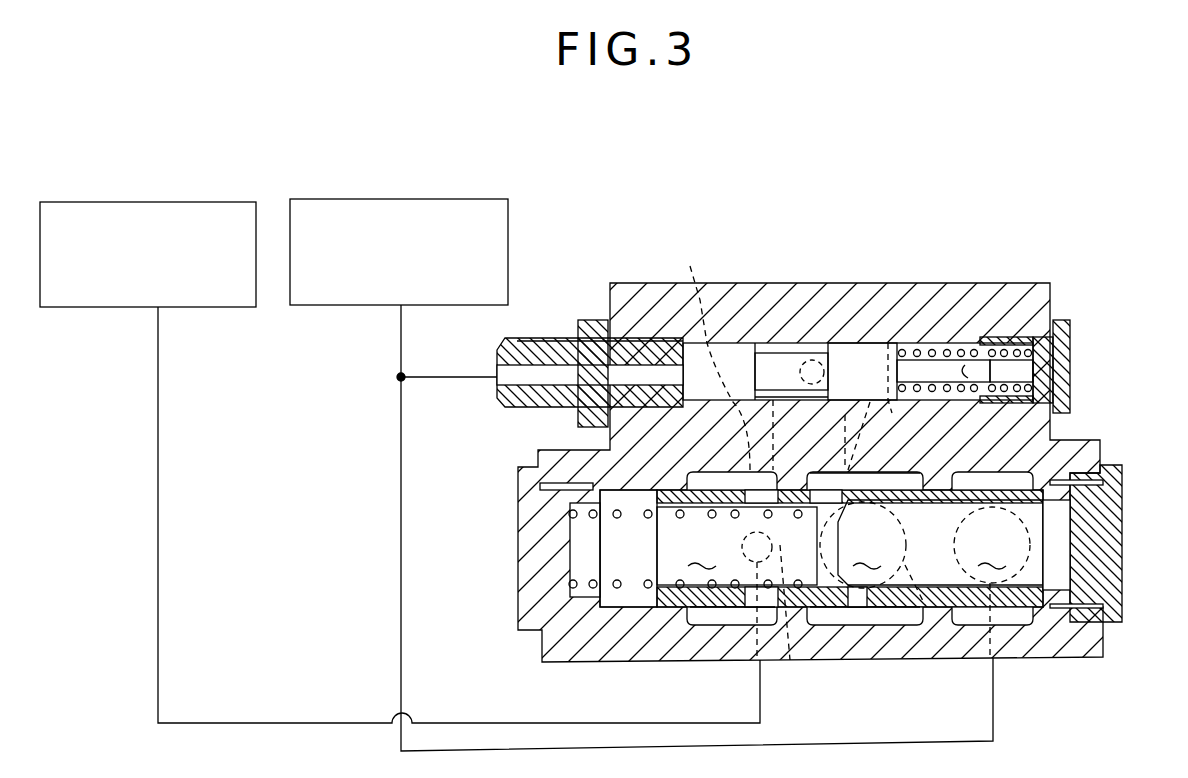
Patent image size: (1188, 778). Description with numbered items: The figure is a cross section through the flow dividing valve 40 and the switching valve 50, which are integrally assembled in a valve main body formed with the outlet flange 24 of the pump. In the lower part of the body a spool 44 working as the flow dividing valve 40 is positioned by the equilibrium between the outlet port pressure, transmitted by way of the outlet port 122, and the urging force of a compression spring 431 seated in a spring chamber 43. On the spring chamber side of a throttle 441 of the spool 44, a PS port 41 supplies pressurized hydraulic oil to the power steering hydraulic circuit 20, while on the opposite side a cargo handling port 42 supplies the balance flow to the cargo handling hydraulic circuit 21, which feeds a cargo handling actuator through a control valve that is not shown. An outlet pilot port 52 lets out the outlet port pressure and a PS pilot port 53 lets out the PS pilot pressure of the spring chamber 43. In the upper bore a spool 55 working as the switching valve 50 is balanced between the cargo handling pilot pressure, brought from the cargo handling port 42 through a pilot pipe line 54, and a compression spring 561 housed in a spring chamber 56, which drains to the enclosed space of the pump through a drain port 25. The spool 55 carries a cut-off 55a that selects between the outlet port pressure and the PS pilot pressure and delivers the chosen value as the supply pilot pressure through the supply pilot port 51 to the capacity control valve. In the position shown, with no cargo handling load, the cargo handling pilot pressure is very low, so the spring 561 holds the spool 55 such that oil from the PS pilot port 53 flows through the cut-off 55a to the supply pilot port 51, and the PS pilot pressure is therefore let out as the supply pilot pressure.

The power steering hydraulic circuit 20 is at (204, 201).
The cargo handling hydraulic circuit 21 is at (452, 199).
The outlet flange 24 is at (1078, 657).
The drain port 25 is at (977, 335).
The flow dividing valve 40 is at (1127, 538).
The PS port 41 is at (795, 655).
The cargo handling port 42 is at (1017, 575).
The spring chamber 43 is at (677, 597).
The compression spring 431 is at (710, 588).
The spool 44 is at (827, 528).
The throttle 441 is at (830, 538).
The switching valve 50 is at (1078, 367).
The supply pilot port 51 is at (818, 360).
The outlet pilot port 52 is at (888, 343).
The PS pilot port 53 is at (715, 351).
The pilot pipe line 54 is at (401, 636).
The spool 55 is at (865, 343).
The cut-off 55a is at (786, 353).
The spring chamber 56 is at (980, 338).
The compression spring 561 is at (938, 343).
The outlet port 122 is at (925, 605).